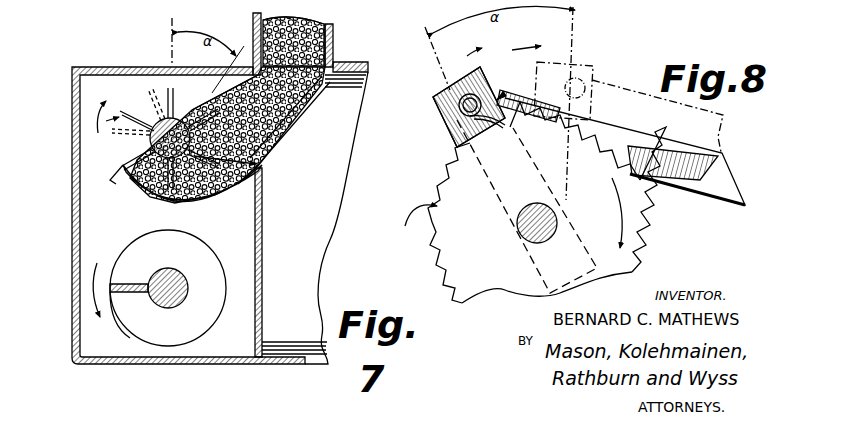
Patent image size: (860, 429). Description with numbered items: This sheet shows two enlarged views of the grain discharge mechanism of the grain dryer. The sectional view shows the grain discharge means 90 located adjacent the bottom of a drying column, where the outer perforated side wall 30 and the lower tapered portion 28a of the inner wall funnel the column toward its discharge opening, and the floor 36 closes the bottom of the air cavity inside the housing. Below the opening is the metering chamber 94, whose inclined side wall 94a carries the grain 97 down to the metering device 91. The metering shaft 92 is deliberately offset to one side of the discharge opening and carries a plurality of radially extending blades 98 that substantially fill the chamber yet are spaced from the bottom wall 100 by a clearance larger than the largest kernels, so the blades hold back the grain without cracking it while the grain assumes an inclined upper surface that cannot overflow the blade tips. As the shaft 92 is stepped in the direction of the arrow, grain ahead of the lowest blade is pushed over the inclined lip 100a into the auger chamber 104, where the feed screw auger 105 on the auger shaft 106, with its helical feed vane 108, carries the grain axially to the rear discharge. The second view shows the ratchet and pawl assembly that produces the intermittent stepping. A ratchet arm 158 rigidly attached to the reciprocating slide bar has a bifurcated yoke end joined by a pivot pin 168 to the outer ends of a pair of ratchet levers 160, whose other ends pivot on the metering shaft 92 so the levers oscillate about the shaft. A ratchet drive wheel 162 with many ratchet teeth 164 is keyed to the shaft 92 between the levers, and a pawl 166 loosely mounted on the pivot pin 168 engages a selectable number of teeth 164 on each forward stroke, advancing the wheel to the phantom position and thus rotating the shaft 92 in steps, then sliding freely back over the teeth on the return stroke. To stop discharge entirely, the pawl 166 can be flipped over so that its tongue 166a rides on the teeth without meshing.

In FIG. 7, the outer perforated side wall 30 is at (253, 28).
In FIG. 7, the grain 97 is at (307, 30).
In FIG. 7, the lower tapered portion 28a is at (333, 49).
In FIG. 7, the floor 36 is at (367, 73).
In FIG. 7, the radially extending blades 98 is at (162, 100).
In FIG. 7, the metering device 91 is at (92, 125).
In FIG. 7, the metering shaft 92 is at (149, 142).
In FIG. 8, the metering shaft 92 is at (528, 233).
In FIG. 7, the inclined lip 100a is at (112, 175).
In FIG. 7, the metering chamber 94 is at (290, 112).
In FIG. 7, the inclined side wall 94a is at (292, 139).
In FIG. 7, the grain discharge means 90 is at (264, 168).
In FIG. 7, the bottom wall 100 is at (198, 200).
In FIG. 7, the feed screw auger 105 is at (118, 243).
In FIG. 7, the auger chamber 104 is at (88, 266).
In FIG. 7, the helical feed vane 108 is at (120, 306).
In FIG. 7, the auger shaft 106 is at (170, 310).
In FIG. 8, the ratchet levers 160 is at (450, 88).
In FIG. 8, the pivot pin 168 is at (458, 105).
In FIG. 8, the pawl 166 is at (451, 128).
In FIG. 8, the tongue 166a is at (504, 94).
In FIG. 8, the ratchet arm 158 is at (727, 167).
In FIG. 8, the ratchet teeth 164 is at (436, 255).
In FIG. 8, the ratchet drive wheel 162 is at (641, 243).